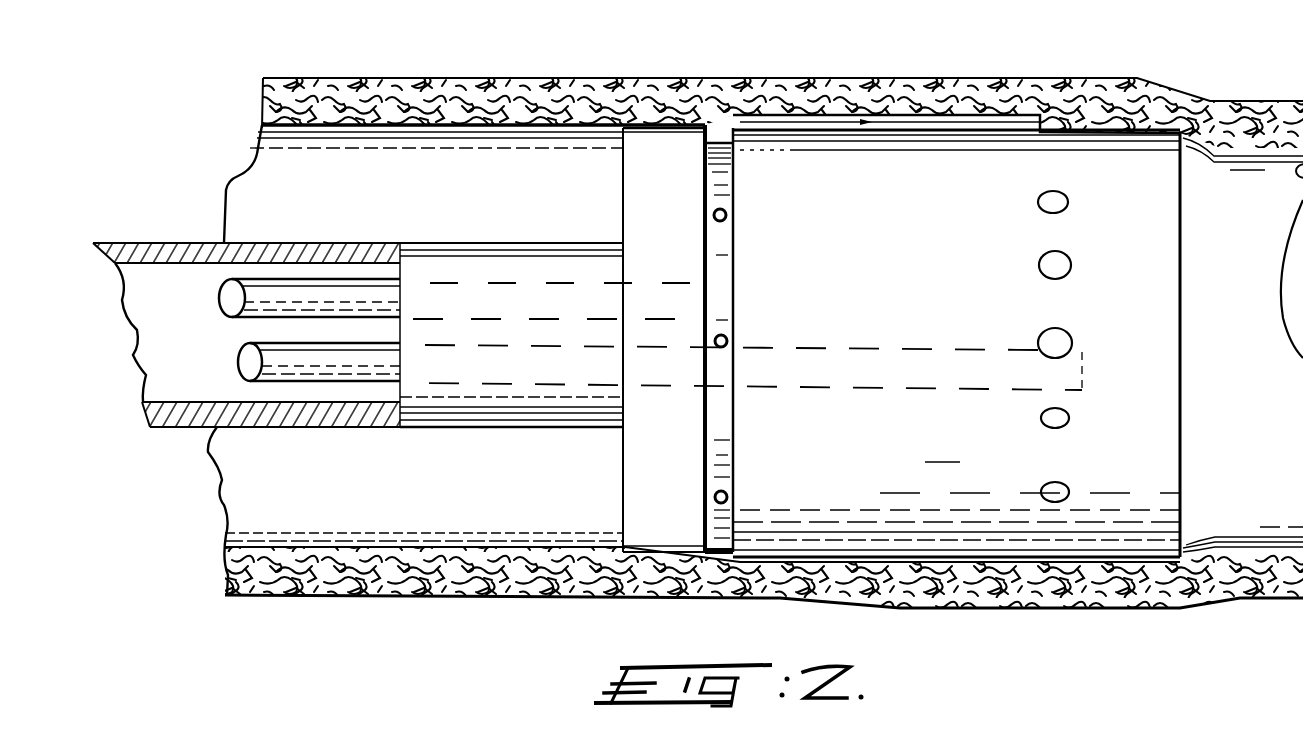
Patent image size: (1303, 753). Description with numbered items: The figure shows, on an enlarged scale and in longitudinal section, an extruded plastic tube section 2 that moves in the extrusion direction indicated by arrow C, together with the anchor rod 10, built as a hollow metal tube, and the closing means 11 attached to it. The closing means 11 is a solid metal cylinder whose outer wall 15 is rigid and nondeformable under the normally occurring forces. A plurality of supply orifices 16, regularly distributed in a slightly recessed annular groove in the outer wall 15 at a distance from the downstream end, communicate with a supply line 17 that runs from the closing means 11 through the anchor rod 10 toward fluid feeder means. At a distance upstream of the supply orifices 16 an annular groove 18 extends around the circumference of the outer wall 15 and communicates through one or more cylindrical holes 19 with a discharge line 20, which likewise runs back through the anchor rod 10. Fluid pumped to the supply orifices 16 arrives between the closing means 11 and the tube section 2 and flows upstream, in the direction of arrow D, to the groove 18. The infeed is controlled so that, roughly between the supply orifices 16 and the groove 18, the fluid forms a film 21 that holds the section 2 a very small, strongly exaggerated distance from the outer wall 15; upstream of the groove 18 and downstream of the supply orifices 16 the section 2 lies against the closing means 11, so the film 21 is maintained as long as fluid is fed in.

The extruded plastic tube section 2 is at (540, 97).
The anchor rod 10 is at (370, 247).
The closing means 11 is at (975, 160).
The outer wall 15 is at (1135, 150).
The supply orifices 16 is at (1060, 198).
The supply line 17 is at (335, 380).
The annular groove 18 is at (703, 165).
The cylindrical holes 19 is at (727, 214).
The discharge line 20 is at (320, 292).
The film of fluid 21 is at (810, 120).
The arrow indicating upstream flow direction D is at (892, 120).
The arrow indicating extrusion direction C is at (818, 624).